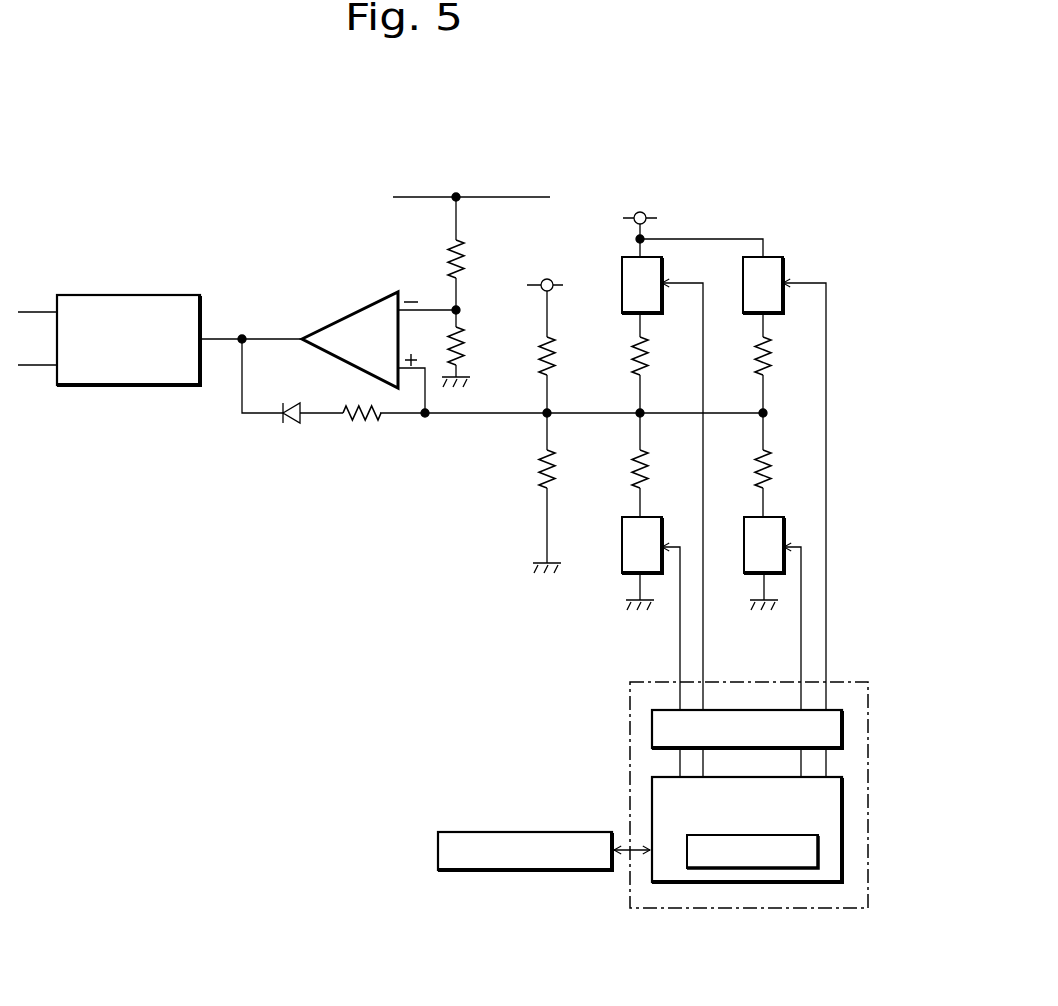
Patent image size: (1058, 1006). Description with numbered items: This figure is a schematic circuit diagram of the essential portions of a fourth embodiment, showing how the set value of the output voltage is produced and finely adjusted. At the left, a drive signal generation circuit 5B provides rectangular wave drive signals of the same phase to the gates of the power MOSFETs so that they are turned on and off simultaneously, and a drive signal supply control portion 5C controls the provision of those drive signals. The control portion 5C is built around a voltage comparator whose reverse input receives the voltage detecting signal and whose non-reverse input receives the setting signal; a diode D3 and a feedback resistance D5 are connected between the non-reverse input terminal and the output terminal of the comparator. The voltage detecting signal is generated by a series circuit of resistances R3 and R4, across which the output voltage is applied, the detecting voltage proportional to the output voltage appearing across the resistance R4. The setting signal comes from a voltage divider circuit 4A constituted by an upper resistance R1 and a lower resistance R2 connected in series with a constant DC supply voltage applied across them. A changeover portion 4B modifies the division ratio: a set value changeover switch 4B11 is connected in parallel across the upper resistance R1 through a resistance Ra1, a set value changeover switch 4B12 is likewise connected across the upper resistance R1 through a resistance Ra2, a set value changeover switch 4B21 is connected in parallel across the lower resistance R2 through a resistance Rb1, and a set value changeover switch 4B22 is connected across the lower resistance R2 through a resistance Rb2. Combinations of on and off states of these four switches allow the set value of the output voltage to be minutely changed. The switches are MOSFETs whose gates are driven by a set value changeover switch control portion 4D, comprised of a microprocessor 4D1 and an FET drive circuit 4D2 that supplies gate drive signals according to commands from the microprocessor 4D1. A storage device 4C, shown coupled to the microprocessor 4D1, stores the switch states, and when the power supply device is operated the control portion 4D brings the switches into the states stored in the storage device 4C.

The drive signal generation circuit 5B is at (112, 295).
The drive signal supply control portion 5C is at (320, 312).
The diode D3 is at (293, 426).
The resistor D5 is at (368, 426).
The resistance R3 is at (461, 258).
The resistance R4 is at (464, 347).
The voltage divider circuit 4A is at (544, 394).
The upper resistance R1 is at (553, 356).
The lower resistance R2 is at (540, 470).
The changeover portion 4B is at (721, 414).
The set value changeover switch 4B11 is at (670, 261).
The set value changeover switch 4B12 is at (791, 257).
The set value changeover switch 4B21 is at (614, 555).
The set value changeover switch 4B22 is at (791, 528).
The resistance Ra1 is at (645, 358).
The resistance Ra2 is at (770, 357).
The resistance Rb1 is at (648, 466).
The resistance Rb2 is at (770, 481).
The set value changeover switch control portion 4D is at (781, 765).
The microprocessor 4D1 is at (845, 805).
The FET drive circuit 4D2 is at (845, 722).
The storage device 4C is at (535, 872).